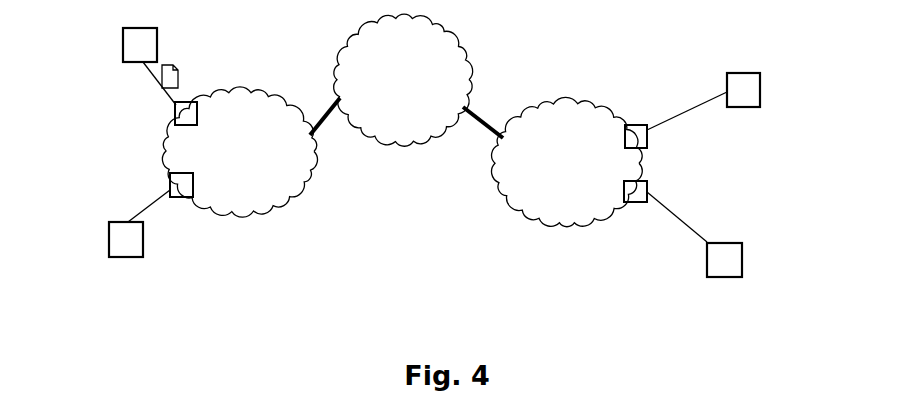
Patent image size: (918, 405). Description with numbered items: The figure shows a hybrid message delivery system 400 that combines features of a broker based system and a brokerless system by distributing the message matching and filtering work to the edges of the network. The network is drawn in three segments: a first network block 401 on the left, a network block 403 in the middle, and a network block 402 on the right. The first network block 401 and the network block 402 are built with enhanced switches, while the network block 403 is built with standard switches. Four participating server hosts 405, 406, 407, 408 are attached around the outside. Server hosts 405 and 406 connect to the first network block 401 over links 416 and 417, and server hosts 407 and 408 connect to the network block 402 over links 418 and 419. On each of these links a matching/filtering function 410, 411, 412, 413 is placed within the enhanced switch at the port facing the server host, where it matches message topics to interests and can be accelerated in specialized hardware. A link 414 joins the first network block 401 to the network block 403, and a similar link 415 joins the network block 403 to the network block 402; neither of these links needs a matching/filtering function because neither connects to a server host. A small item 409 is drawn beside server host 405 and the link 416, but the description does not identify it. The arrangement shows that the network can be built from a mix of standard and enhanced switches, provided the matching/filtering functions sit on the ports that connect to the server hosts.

The hybrid message delivery system 400 is at (397, 234).
The first network block 401 is at (167, 152).
The network block 402 is at (646, 165).
The network block 403 is at (350, 37).
The server host 405 is at (123, 46).
The server host 406 is at (109, 243).
The server host 407 is at (760, 92).
The server host 408 is at (742, 258).
The data packet 409 is at (170, 67).
The matching/filtering function 410 is at (175, 116).
The matching/filtering function 411 is at (177, 197).
The matching/filtering function 412 is at (634, 125).
The matching/filtering function 413 is at (635, 202).
The link 414 is at (327, 117).
The link 415 is at (488, 120).
The link 416 is at (146, 71).
The link 417 is at (145, 198).
The link 418 is at (710, 92).
The link 419 is at (669, 211).